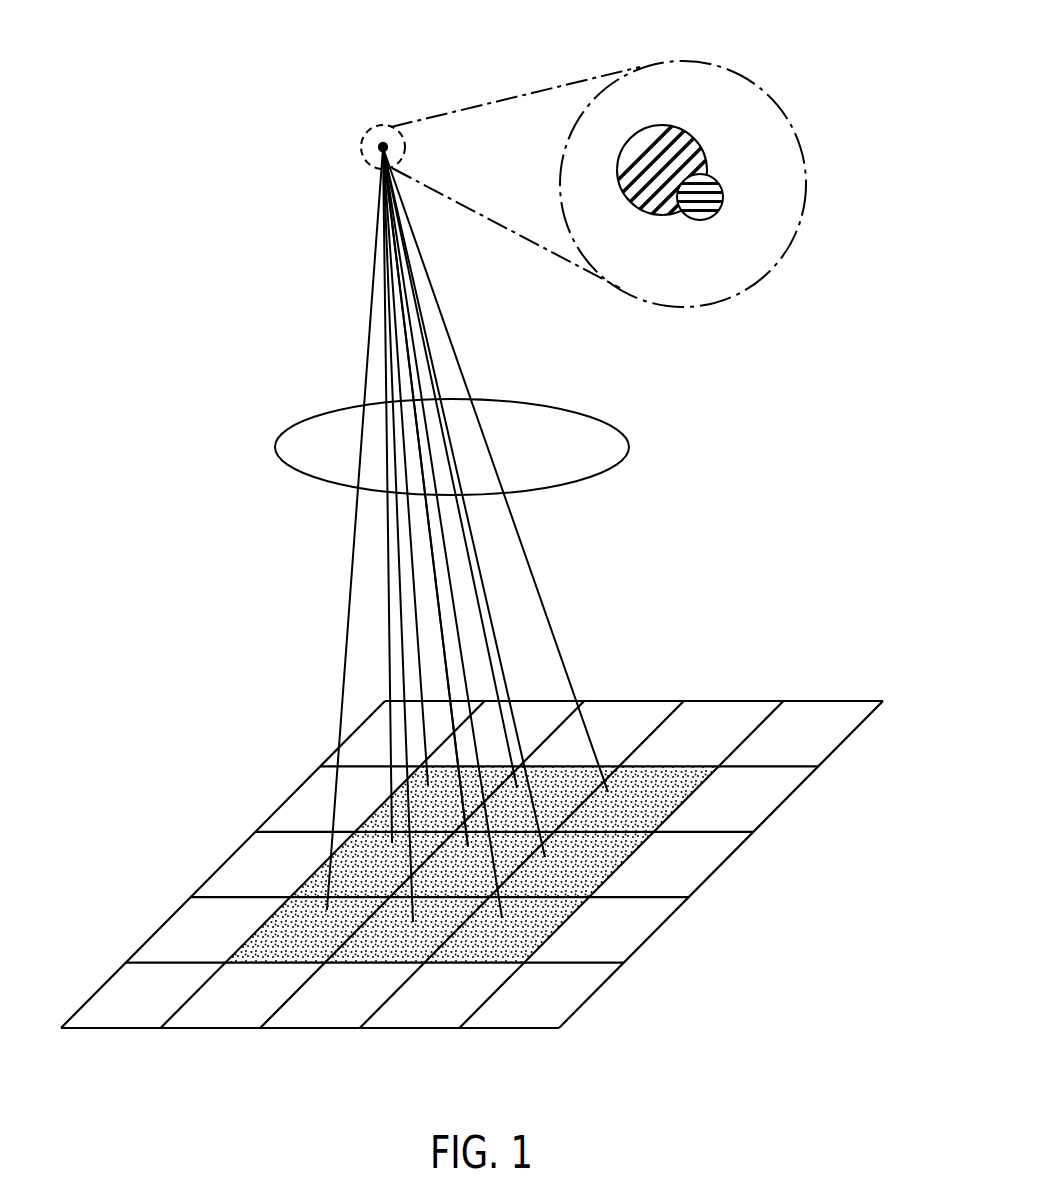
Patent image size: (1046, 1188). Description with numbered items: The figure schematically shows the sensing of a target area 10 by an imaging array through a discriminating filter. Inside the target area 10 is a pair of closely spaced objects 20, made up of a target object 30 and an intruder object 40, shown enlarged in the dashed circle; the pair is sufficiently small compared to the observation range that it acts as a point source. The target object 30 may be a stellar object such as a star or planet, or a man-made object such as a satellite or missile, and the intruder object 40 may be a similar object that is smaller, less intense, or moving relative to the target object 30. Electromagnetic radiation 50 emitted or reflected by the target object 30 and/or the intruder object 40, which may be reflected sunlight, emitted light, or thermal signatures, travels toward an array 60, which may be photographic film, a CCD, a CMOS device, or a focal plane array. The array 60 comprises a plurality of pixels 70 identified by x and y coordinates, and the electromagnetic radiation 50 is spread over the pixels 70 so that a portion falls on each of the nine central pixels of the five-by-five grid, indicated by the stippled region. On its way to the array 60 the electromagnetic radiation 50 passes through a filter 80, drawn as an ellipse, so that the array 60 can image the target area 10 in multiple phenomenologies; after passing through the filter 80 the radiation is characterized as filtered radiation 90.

The target area 10 is at (375, 134).
The pair of closely spaced objects 20 is at (383, 146).
The target object 30 is at (675, 138).
The intruder object 40 is at (722, 202).
The electromagnetic radiation 50 is at (386, 299).
The array 60 is at (469, 857).
The pixels 70 is at (467, 867).
The filter 80 is at (602, 458).
The filtered radiation 90 is at (470, 606).